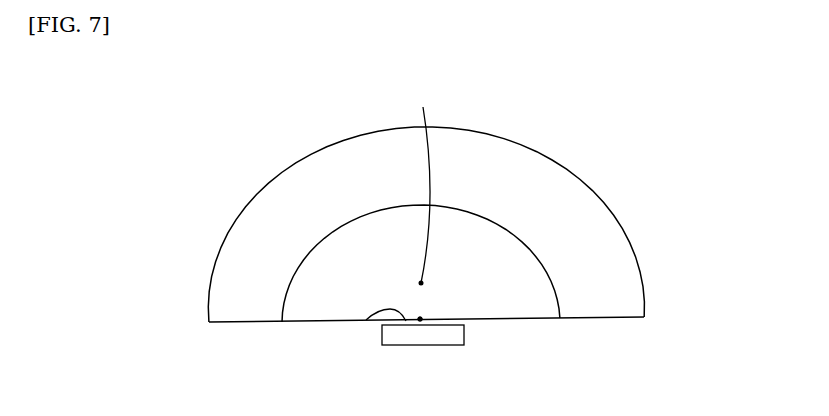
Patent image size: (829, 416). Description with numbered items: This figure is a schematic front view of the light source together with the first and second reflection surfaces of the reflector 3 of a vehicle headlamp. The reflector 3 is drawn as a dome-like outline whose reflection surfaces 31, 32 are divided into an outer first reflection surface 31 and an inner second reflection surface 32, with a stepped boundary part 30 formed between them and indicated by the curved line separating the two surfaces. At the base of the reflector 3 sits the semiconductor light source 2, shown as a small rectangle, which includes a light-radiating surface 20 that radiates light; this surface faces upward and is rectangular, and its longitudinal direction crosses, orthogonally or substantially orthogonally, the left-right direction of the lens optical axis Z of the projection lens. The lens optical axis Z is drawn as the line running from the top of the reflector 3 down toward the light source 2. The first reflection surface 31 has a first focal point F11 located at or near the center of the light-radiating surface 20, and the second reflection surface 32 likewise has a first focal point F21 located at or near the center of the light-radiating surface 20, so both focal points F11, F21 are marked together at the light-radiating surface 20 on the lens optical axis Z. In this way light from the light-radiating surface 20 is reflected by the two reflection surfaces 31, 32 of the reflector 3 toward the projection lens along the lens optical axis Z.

The reflector 3 is at (287, 168).
The stepped boundary part 30 is at (528, 247).
The first reflection surface 31 is at (537, 177).
The second reflection surface 32 is at (530, 292).
The semiconductor light source 2 is at (466, 337).
The light-radiating surface 20 is at (366, 320).
The lens optical axis Z is at (423, 182).
The first focal point of the first reflection surface F11 is at (420, 319).
The first focal point of the second reflection surface F21 is at (420, 319).